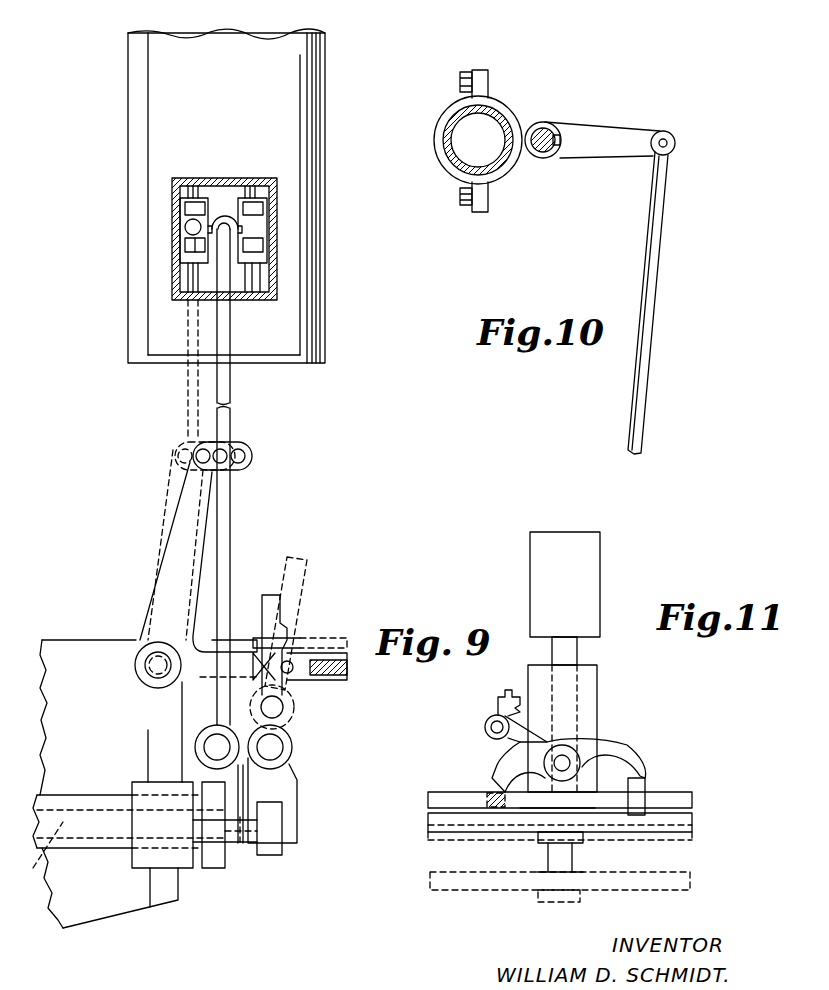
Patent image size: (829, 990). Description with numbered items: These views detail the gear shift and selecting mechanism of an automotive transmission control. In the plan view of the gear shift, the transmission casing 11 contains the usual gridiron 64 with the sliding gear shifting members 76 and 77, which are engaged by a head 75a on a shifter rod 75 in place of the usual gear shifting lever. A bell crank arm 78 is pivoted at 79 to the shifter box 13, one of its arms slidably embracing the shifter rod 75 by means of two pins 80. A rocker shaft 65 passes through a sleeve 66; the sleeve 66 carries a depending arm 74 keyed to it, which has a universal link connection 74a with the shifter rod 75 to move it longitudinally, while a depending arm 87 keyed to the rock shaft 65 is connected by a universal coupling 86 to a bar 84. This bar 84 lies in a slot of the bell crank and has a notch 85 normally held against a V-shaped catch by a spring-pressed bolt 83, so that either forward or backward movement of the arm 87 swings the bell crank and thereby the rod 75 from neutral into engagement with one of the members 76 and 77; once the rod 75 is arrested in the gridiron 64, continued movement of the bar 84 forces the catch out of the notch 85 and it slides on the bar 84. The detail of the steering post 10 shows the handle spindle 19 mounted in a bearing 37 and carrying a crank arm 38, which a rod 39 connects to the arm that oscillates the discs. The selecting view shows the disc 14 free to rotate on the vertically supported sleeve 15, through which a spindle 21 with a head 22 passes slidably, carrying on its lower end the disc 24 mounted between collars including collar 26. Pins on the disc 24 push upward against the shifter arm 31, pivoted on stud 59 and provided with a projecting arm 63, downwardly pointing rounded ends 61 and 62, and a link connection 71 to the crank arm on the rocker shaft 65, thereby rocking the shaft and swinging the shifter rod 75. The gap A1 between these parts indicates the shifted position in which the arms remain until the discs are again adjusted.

In FIG. 9, the transmission casing 11 is at (163, 78).
In FIG. 9, the gridiron 64 is at (227, 180).
In FIG. 9, the sliding gear shifting member 76 is at (190, 196).
In FIG. 9, the sliding gear shifting member 77 is at (262, 228).
In FIG. 9, the head 75a is at (226, 222).
In FIG. 9, the shifter rod 75 is at (231, 331).
In FIG. 9, the pins 80 is at (232, 455).
In FIG. 9, the bell crank arm 78 is at (172, 568).
In FIG. 9, the pivot 79 is at (152, 663).
In FIG. 9, the shifter box 13 is at (60, 648).
In FIG. 9, the universal link connection 74a is at (203, 764).
In FIG. 9, the depending arm 74 is at (217, 858).
In FIG. 9, the sleeve 66 is at (107, 840).
In FIG. 9, the rocker shaft 65 is at (35, 857).
In FIG. 9, the depending arm 87 is at (272, 845).
In FIG. 9, the universal coupling 86 is at (284, 777).
In FIG. 9, the bar 84 is at (277, 612).
In FIG. 9, the notch 85 is at (262, 665).
In FIG. 9, the spring-pressed bolt 83 is at (288, 668).
In FIG. 10, the steering post 10 is at (498, 113).
In FIG. 10, the spindle 19 is at (549, 127).
In FIG. 10, the bearing 37 is at (527, 156).
In FIG. 10, the crank arm 38 is at (598, 128).
In FIG. 10, the rod 39 is at (650, 240).
In FIG. 11, the head 22 is at (592, 576).
In FIG. 11, the spindle 21 is at (578, 653).
In FIG. 11, the sleeve 15 is at (590, 703).
In FIG. 11, the disc 14 is at (683, 803).
In FIG. 11, the disc 24 is at (690, 825).
In FIG. 11, the collar 26 is at (545, 833).
In FIG. 11, the stud 59 is at (562, 763).
In FIG. 11, the shifter arm 31 is at (593, 748).
In FIG. 11, the projecting arm 63 is at (517, 740).
In FIG. 11, the link connection 71 is at (495, 707).
In FIG. 11, the downwardly pointing end 61 is at (490, 793).
In FIG. 11, the downwardly pointing end 62 is at (640, 770).
In FIG. 11, the gap A1 is at (640, 788).